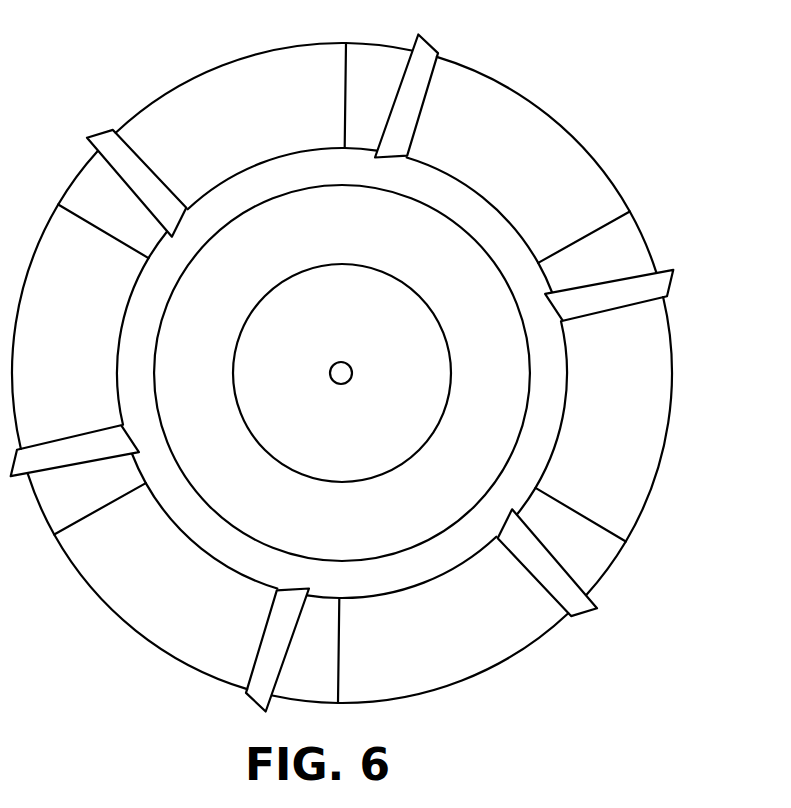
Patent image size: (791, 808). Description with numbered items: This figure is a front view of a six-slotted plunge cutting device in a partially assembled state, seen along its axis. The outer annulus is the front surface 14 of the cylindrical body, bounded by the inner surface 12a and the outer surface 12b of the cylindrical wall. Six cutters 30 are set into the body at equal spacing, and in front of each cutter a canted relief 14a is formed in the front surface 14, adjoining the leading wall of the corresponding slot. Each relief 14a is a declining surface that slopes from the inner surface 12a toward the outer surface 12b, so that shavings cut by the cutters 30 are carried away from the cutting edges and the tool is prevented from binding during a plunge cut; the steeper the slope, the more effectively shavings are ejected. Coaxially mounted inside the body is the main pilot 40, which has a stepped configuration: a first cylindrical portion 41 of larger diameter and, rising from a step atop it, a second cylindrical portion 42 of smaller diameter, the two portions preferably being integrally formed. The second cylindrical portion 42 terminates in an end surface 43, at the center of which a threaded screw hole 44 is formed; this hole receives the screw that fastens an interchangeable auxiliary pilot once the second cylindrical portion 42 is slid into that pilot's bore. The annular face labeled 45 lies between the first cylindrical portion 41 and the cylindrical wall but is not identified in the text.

The inner surface 12a is at (570, 356).
The outer surface 12b is at (373, 359).
The front surface 14 is at (373, 373).
The canted relief 14a is at (640, 228).
The cutter 30 is at (428, 36).
The main pilot 40 is at (336, 410).
The first cylindrical portion 41 is at (152, 397).
The second cylindrical portion 42 is at (253, 440).
The end surface 43 is at (291, 449).
The threaded screw hole 44 is at (351, 384).
The annular face 45 is at (540, 433).